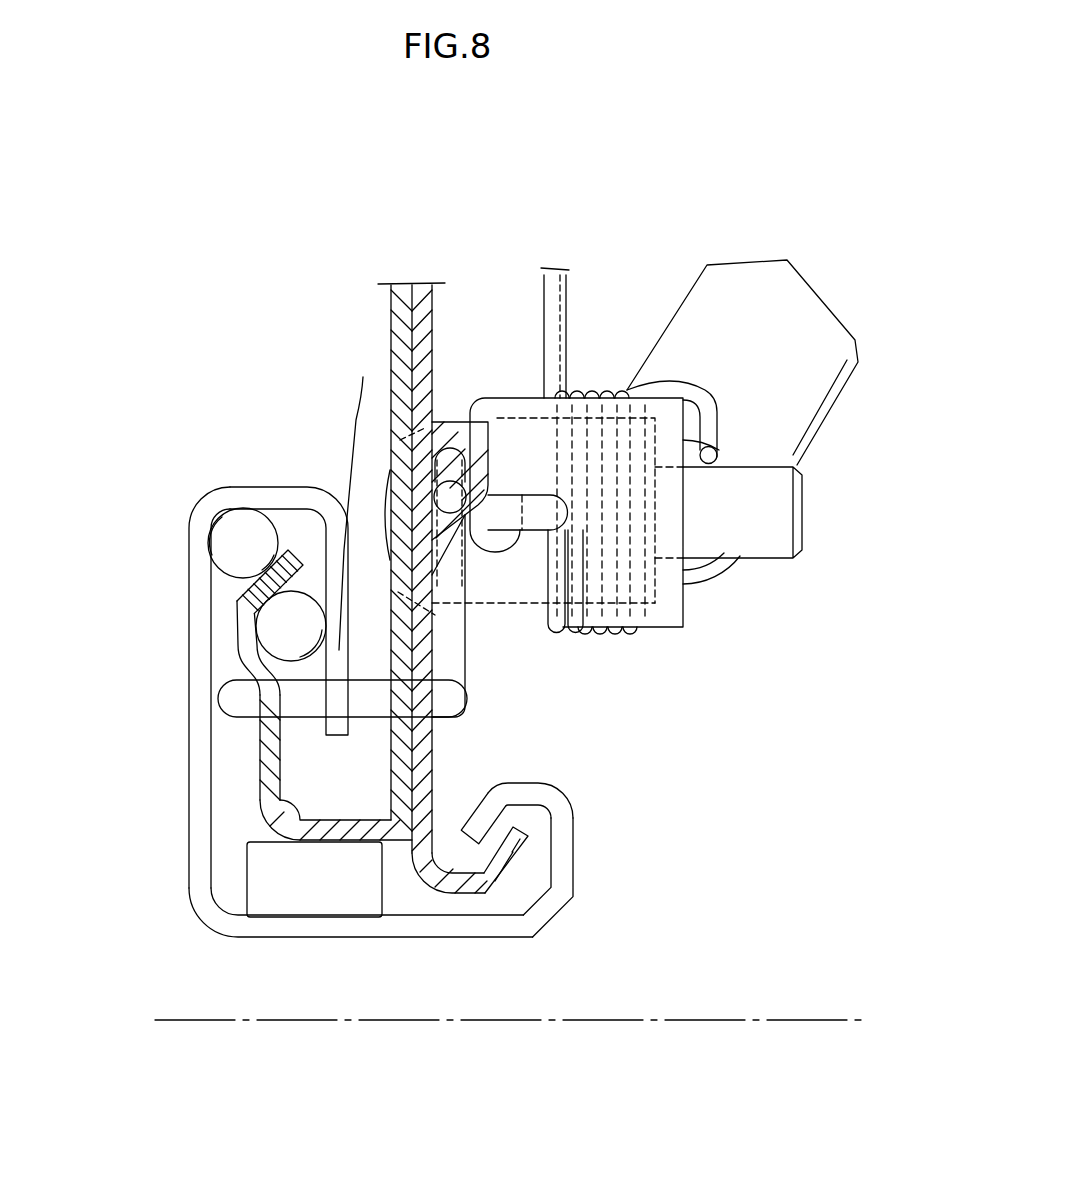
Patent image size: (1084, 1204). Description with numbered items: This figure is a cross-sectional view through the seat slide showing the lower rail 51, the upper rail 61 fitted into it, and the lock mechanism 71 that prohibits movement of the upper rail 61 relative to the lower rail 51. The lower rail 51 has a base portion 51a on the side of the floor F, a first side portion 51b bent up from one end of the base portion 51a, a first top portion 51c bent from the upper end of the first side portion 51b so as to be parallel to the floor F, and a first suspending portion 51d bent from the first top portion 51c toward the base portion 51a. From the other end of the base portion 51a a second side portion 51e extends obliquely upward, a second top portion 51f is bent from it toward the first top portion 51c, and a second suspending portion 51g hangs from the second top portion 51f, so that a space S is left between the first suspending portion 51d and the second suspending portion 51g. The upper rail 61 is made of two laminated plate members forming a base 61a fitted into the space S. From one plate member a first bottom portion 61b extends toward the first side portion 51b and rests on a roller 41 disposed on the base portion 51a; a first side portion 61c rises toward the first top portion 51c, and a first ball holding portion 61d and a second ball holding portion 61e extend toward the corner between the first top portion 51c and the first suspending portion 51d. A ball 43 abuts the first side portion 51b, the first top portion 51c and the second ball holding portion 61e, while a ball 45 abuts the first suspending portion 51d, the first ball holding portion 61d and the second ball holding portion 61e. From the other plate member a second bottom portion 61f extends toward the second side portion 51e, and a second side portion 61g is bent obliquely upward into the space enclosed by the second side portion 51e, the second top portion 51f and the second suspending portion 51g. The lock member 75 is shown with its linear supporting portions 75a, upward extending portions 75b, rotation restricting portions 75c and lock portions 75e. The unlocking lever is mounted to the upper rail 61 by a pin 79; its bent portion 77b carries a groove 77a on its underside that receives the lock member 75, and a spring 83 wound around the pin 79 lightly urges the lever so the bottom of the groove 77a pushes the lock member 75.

The roller 41 is at (278, 892).
The ball 43 is at (240, 527).
The ball 45 is at (283, 640).
The lower rail 51 is at (389, 709).
The base portion 51a is at (318, 930).
The first side portion 51b is at (203, 828).
The first top portion 51c is at (283, 487).
The first suspending portion 51d is at (363, 398).
The second side portion 51e is at (552, 875).
The second top portion 51f is at (532, 802).
The second suspending portion 51g is at (478, 818).
The upper rail 61 is at (408, 228).
The base 61a is at (418, 342).
The first bottom portion 61b is at (263, 803).
The first side portion 61c is at (268, 745).
The first ball holding portion 61d is at (247, 627).
The second ball holding portion 61e is at (263, 577).
The second bottom portion 61f is at (473, 893).
The second side portion 61g is at (513, 848).
The lock mechanism 71 is at (763, 223).
The lock member 75 is at (489, 692).
The linear supporting portions 75a is at (452, 492).
The upward extending portions 75b is at (447, 462).
The rotation restricting portions 75c is at (455, 653).
The lock portions 75e is at (302, 700).
The groove 77a is at (535, 457).
The bent portion 77b is at (560, 395).
The pin 79 is at (748, 540).
The spring 83 is at (712, 407).
The space S is at (468, 770).
The floor F is at (805, 1000).